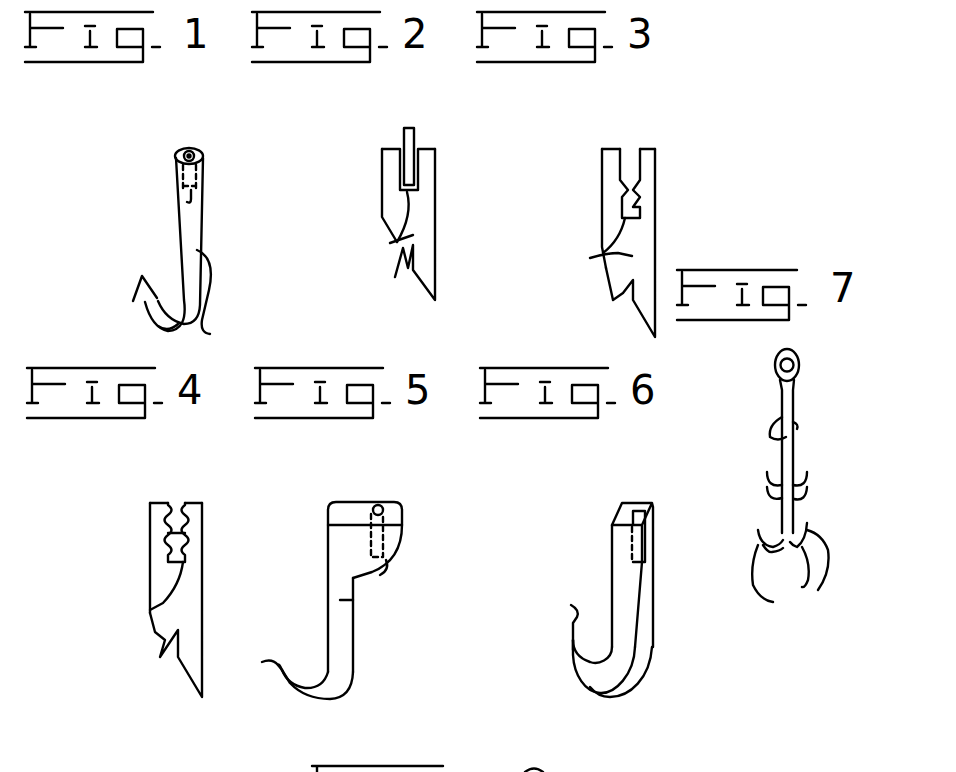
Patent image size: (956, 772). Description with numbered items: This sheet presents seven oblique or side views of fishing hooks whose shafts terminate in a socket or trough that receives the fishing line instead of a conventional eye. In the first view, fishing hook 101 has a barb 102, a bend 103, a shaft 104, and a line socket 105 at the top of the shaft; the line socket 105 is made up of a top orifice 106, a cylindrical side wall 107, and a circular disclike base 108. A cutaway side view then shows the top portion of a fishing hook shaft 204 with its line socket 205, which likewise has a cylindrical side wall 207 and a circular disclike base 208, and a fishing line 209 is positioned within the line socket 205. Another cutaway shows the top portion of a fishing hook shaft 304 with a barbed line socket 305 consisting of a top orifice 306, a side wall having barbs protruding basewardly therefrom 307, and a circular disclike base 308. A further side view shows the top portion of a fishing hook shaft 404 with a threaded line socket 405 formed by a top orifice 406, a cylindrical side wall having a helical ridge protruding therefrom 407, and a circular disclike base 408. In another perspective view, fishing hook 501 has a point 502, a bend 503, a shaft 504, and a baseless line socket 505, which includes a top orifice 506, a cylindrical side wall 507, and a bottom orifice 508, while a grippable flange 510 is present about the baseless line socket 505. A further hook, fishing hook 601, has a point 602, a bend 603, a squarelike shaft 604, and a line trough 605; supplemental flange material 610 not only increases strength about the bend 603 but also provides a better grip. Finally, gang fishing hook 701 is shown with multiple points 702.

In FIG. 1, the fishing hook 101 is at (112, 240).
In FIG. 1, the barb 102 is at (141, 279).
In FIG. 1, the bend 103 is at (170, 327).
In FIG. 1, the shaft 104 is at (236, 299).
In FIG. 1, the line socket 105 is at (172, 165).
In FIG. 1, the top orifice 106 is at (190, 150).
In FIG. 1, the cylindrical side wall 107 is at (197, 167).
In FIG. 1, the circular disclike base 108 is at (186, 207).
In FIG. 2, the fishing hook shaft 204 is at (397, 243).
In FIG. 2, the line socket 205 is at (386, 190).
In FIG. 2, the cylindrical side wall 207 is at (420, 164).
In FIG. 2, the circular disclike base 208 is at (390, 243).
In FIG. 2, the fishing line 209 is at (415, 148).
In FIG. 3, the fishing hook shaft 304 is at (617, 268).
In FIG. 3, the barbed line socket 305 is at (605, 196).
In FIG. 3, the top orifice 306 is at (632, 148).
In FIG. 3, the side wall having barbs protruding basewardly therefrom 307 is at (642, 180).
In FIG. 3, the circular disclike base 308 is at (590, 258).
In FIG. 4, the fishing hook shaft 404 is at (150, 633).
In FIG. 4, the threaded line socket 405 is at (158, 554).
In FIG. 4, the top orifice 406 is at (177, 505).
In FIG. 4, the cylindrical side wall having a helical ridge protruding therefrom 407 is at (168, 530).
In FIG. 4, the circular disclike base 408 is at (152, 613).
In FIG. 5, the fishing hook 501 is at (308, 592).
In FIG. 5, the point 502 is at (262, 662).
In FIG. 5, the bend 503 is at (332, 698).
In FIG. 5, the shaft 504 is at (342, 600).
In FIG. 5, the baseless line socket 505 is at (352, 544).
In FIG. 5, the top orifice 506 is at (376, 503).
In FIG. 5, the cylindrical side wall 507 is at (388, 538).
In FIG. 5, the bottom orifice 508 is at (382, 580).
In FIG. 5, the grippable flange 510 is at (393, 555).
In FIG. 6, the fishing hook 601 is at (588, 549).
In FIG. 6, the point 602 is at (571, 605).
In FIG. 6, the bend 603 is at (584, 666).
In FIG. 6, the squarelike shaft 604 is at (620, 544).
In FIG. 6, the line trough 605 is at (655, 543).
In FIG. 6, the supplemental flange material 610 is at (613, 682).
In FIG. 7, the gang fishing hook 701 is at (753, 397).
In FIG. 7, the multiple points 702 is at (775, 425).